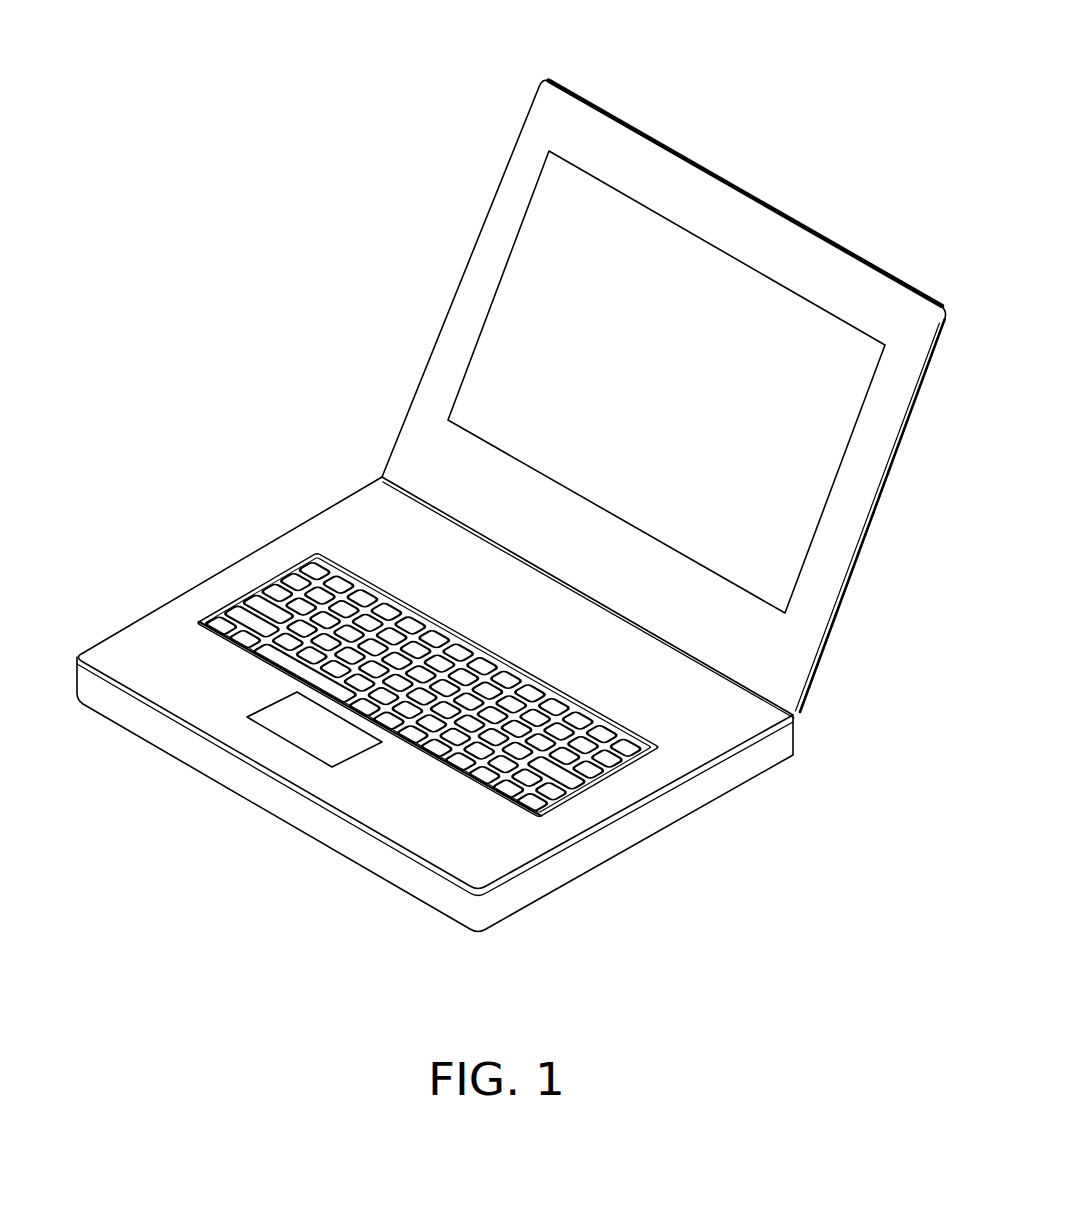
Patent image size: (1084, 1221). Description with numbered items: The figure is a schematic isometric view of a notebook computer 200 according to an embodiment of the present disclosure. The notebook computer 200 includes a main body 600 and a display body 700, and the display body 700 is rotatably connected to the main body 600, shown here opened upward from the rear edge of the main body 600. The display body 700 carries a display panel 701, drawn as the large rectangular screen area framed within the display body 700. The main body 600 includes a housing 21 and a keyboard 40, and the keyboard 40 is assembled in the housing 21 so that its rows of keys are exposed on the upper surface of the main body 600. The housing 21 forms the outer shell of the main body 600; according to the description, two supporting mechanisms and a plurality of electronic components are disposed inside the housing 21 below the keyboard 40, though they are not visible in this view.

The notebook computer 200 is at (507, 472).
The display body 700 is at (619, 396).
The display panel 701 is at (537, 290).
The main body 600 is at (431, 704).
The keyboard 40 is at (273, 587).
The housing 21 is at (623, 833).